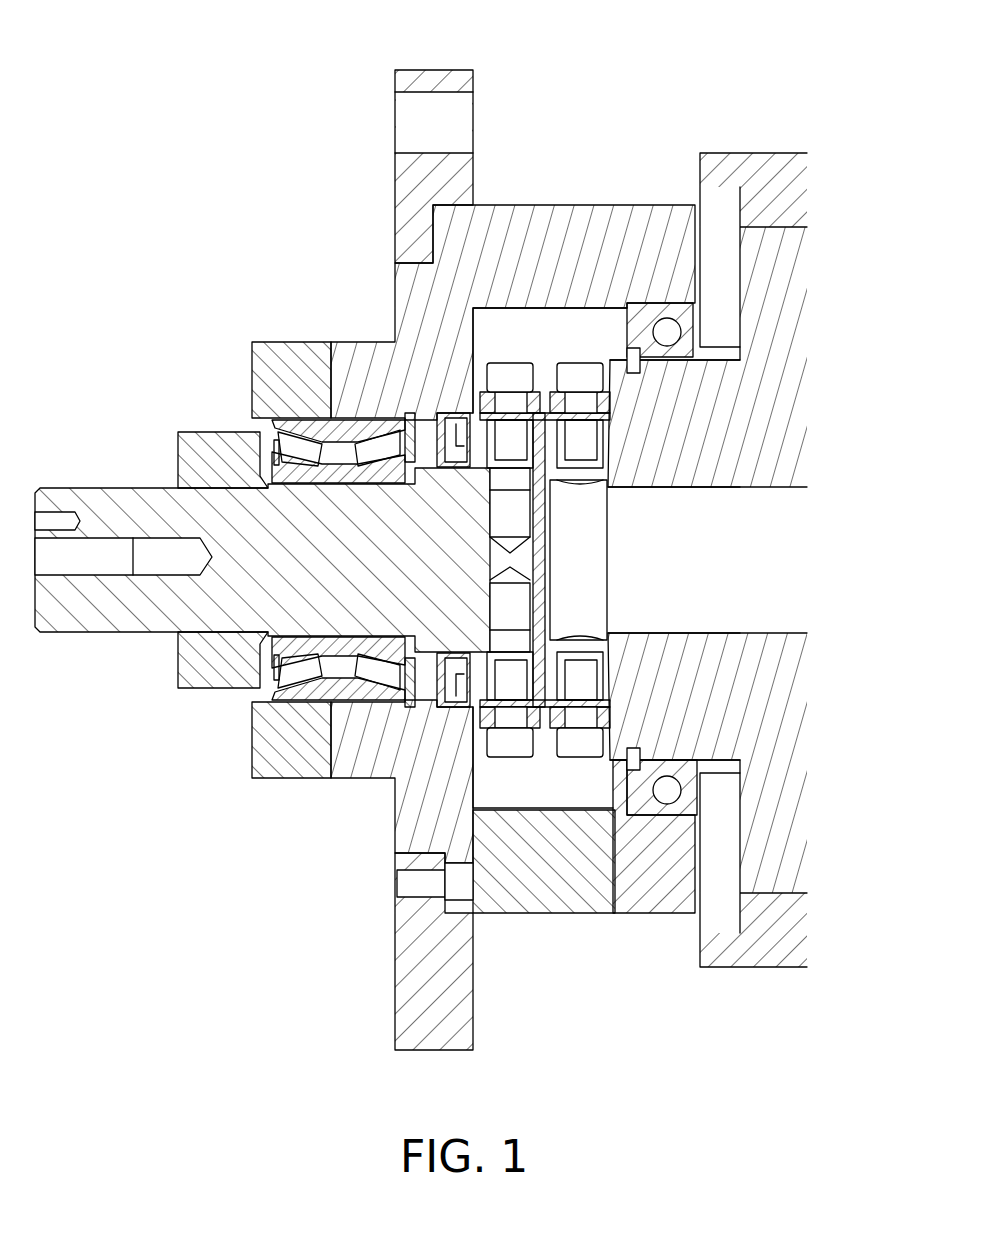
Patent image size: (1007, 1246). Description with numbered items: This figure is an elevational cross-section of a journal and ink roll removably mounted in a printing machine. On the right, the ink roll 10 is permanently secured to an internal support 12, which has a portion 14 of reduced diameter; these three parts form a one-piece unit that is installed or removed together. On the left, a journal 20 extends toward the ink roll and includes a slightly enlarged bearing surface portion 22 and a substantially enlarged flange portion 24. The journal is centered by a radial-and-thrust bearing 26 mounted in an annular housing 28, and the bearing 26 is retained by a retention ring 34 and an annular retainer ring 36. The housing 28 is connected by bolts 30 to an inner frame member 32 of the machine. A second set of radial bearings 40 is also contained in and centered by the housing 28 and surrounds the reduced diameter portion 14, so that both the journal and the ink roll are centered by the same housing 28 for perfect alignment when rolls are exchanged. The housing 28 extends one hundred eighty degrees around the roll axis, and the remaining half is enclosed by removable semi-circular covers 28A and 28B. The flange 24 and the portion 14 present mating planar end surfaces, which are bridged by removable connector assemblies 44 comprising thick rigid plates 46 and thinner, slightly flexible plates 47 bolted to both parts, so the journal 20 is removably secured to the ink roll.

The ink roll 10 is at (780, 175).
The internal support 12 is at (755, 460).
The reduced diameter portion 14 is at (640, 428).
The journal 20 is at (195, 605).
The bearing surface portion 22 is at (335, 643).
The flange portion 24 is at (478, 547).
The radial-and-thrust bearing 26 is at (300, 450).
The annular housing 28 is at (425, 305).
The removable semi-circular cover 28A is at (550, 885).
The removable semi-circular cover 28B is at (658, 880).
The bolts 30 is at (400, 885).
The inner frame member 32 is at (412, 175).
The retention ring 34 is at (205, 445).
The annular retainer ring 36 is at (280, 355).
The radial bearings 40 is at (670, 355).
The removable connector assemblies 44 is at (548, 360).
The plates 46 is at (605, 715).
The plates 47 is at (610, 715).